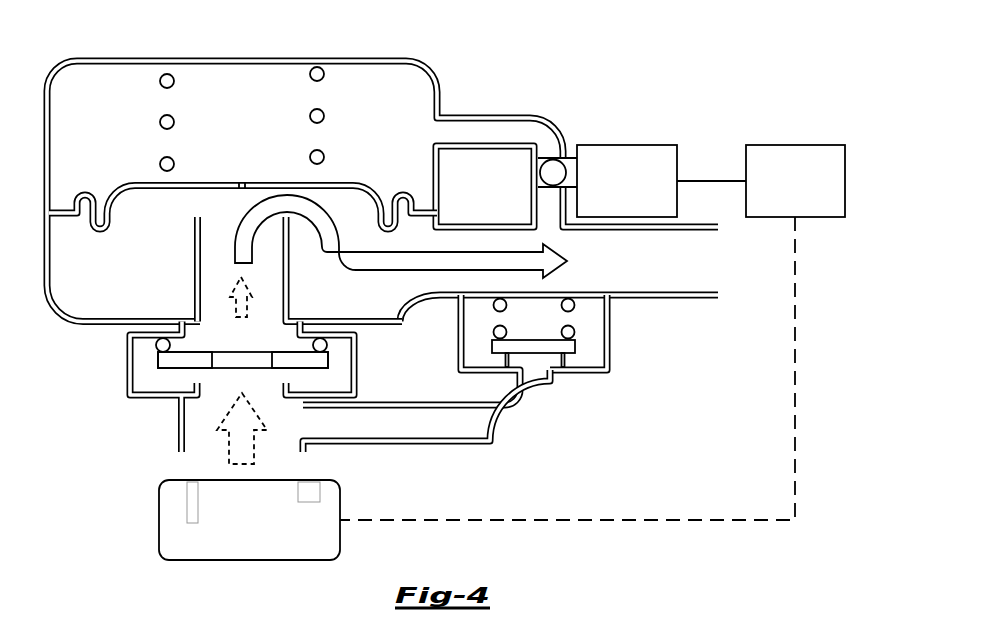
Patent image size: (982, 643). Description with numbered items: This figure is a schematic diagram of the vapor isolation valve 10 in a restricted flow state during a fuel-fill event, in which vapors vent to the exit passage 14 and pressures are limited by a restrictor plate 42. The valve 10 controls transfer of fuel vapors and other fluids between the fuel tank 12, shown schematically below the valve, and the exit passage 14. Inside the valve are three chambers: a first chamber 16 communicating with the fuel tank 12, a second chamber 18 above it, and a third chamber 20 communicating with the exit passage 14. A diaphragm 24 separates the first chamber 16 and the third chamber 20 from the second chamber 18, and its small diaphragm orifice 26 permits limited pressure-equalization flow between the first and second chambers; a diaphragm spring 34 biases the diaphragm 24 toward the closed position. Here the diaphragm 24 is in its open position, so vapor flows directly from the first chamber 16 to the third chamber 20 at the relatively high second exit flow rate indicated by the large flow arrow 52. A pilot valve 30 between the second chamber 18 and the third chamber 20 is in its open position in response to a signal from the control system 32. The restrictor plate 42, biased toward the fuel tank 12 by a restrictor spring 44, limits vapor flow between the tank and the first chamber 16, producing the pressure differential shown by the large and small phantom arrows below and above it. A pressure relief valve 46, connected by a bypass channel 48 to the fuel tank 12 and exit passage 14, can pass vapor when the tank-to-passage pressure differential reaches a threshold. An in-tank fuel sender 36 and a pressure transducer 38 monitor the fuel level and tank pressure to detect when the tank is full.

The vapor isolation valve 10 is at (475, 63).
The fuel tank 12 is at (256, 537).
The exit passage 14 is at (665, 274).
The first chamber 16 is at (250, 344).
The second chamber 18 is at (251, 121).
The third chamber 20 is at (128, 304).
The diaphragm 24 is at (135, 189).
The diaphragm orifice 26 is at (241, 182).
The pilot valve 30 is at (570, 143).
The control system 32 is at (805, 192).
The diaphragm spring 34 is at (325, 113).
The in-tank fuel sender 36 is at (190, 503).
The pressure transducer 38 is at (320, 493).
The restrictor plate 42 is at (160, 360).
The restrictor spring 44 is at (330, 346).
The pressure relief valve 46 is at (560, 380).
The bypass channel 48 is at (400, 442).
The large flow arrow 52 is at (427, 271).